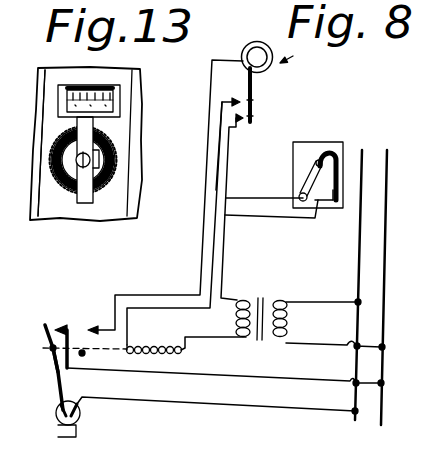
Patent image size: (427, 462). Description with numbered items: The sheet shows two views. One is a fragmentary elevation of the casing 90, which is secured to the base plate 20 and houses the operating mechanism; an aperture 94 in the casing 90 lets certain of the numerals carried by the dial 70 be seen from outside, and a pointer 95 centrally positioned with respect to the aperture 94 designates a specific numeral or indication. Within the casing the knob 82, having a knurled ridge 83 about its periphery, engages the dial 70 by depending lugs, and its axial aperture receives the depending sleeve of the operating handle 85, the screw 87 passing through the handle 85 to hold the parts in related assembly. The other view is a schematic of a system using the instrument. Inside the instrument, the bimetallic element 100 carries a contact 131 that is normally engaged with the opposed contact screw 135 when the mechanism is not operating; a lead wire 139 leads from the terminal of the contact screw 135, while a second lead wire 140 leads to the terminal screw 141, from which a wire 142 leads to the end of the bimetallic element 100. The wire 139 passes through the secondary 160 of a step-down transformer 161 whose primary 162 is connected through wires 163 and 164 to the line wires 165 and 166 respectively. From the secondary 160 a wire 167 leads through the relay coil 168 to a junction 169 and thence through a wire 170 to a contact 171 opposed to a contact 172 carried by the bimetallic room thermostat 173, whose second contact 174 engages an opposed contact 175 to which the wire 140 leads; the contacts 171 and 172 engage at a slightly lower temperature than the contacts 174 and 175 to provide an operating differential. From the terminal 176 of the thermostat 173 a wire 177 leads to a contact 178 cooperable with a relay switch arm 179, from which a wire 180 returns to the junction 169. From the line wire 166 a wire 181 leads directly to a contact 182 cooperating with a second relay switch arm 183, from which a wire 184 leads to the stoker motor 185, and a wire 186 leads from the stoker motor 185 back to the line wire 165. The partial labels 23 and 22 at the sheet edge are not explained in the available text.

In FIG. 13, the dial 70 is at (62, 86).
In FIG. 13, the aperture 94 is at (100, 84).
In FIG. 13, the pointer 95 is at (67, 108).
In FIG. 13, the knob 82 is at (60, 131).
In FIG. 13, the knurled ridge 83 is at (72, 138).
In FIG. 13, the screw 87 is at (80, 162).
In FIG. 13, the operating handle 85 is at (80, 192).
In FIG. 13, the casing 90 is at (111, 208).
In FIG. 8, the terminal 176 is at (257, 42).
In FIG. 8, the bimetallic room thermostat 173 is at (297, 51).
In FIG. 8, the contact 171 is at (240, 98).
In FIG. 8, the contact 172 is at (254, 100).
In FIG. 8, the second contact 174 is at (255, 116).
In FIG. 8, the contact 175 is at (238, 122).
In FIG. 8, the wire 177 is at (207, 156).
In FIG. 8, the wire 170 is at (217, 186).
In FIG. 8, the lead wire 140 is at (251, 196).
In FIG. 8, the terminal screw 141 is at (302, 196).
In FIG. 8, the wire 142 is at (310, 170).
In FIG. 8, the base plate 20 is at (328, 134).
In FIG. 8, the bimetallic element 100 is at (340, 164).
In FIG. 8, the contact 131 is at (328, 200).
In FIG. 8, the contact screw 135 is at (322, 204).
In FIG. 8, the lead wire 139 is at (252, 222).
In FIG. 8, the line wire 165 is at (362, 254).
In FIG. 8, the line wire 166 is at (383, 272).
In FIG. 8, the secondary 160 is at (239, 298).
In FIG. 8, the step-down transformer 161 is at (267, 298).
In FIG. 8, the primary 162 is at (310, 300).
In FIG. 8, the wire 163 is at (293, 312).
In FIG. 8, the wire 164 is at (306, 334).
In FIG. 8, the wire 167 is at (203, 345).
In FIG. 8, the relay coil 168 is at (160, 347).
In FIG. 8, the junction 169 is at (130, 345).
In FIG. 8, the contact 178 is at (90, 325).
In FIG. 8, the relay switch arm 179 is at (82, 352).
In FIG. 8, the wire 180 is at (106, 360).
In FIG. 8, the wire 181 is at (282, 372).
In FIG. 8, the contact 182 is at (58, 322).
In FIG. 8, the second relay switch arm 183 is at (42, 327).
In FIG. 8, the wire 184 is at (56, 386).
In FIG. 8, the stoker motor 185 is at (80, 421).
In FIG. 8, the wire 186 is at (240, 410).
In FIG. 8, the terminal 23 is at (420, 55).
In FIG. 8, the terminal 22 is at (420, 95).